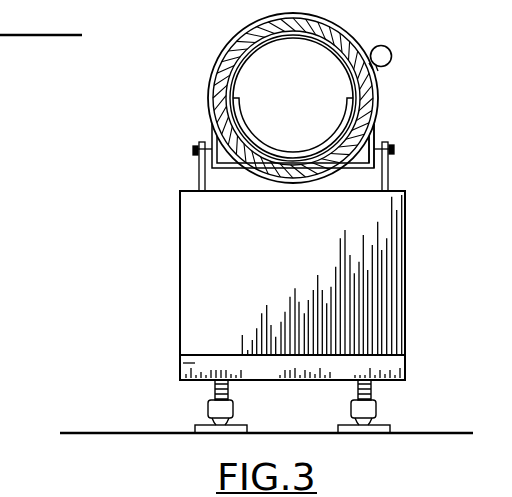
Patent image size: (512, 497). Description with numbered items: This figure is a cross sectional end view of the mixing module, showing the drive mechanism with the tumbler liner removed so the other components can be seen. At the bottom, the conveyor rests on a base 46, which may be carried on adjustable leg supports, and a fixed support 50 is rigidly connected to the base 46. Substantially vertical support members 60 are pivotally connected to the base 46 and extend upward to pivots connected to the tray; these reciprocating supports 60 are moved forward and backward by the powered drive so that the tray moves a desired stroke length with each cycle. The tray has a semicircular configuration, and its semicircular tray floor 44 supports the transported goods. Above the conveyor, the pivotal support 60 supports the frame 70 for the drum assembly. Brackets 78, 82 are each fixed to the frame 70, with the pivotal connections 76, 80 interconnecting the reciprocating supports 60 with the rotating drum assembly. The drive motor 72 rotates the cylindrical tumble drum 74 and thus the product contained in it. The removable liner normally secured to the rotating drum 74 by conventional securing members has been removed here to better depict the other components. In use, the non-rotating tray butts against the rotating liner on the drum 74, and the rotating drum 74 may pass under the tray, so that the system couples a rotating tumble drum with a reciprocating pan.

The tray floor 44 is at (274, 168).
The base 46 is at (178, 367).
The fixed support 50 is at (205, 278).
The support member 60 is at (200, 175).
The frame 70 is at (216, 97).
The drive motor 72 is at (392, 54).
The drum 74 is at (322, 52).
The pivotal connection 76 is at (394, 149).
The bracket 78 is at (374, 138).
The pivotal connection 80 is at (193, 149).
The bracket 82 is at (211, 138).